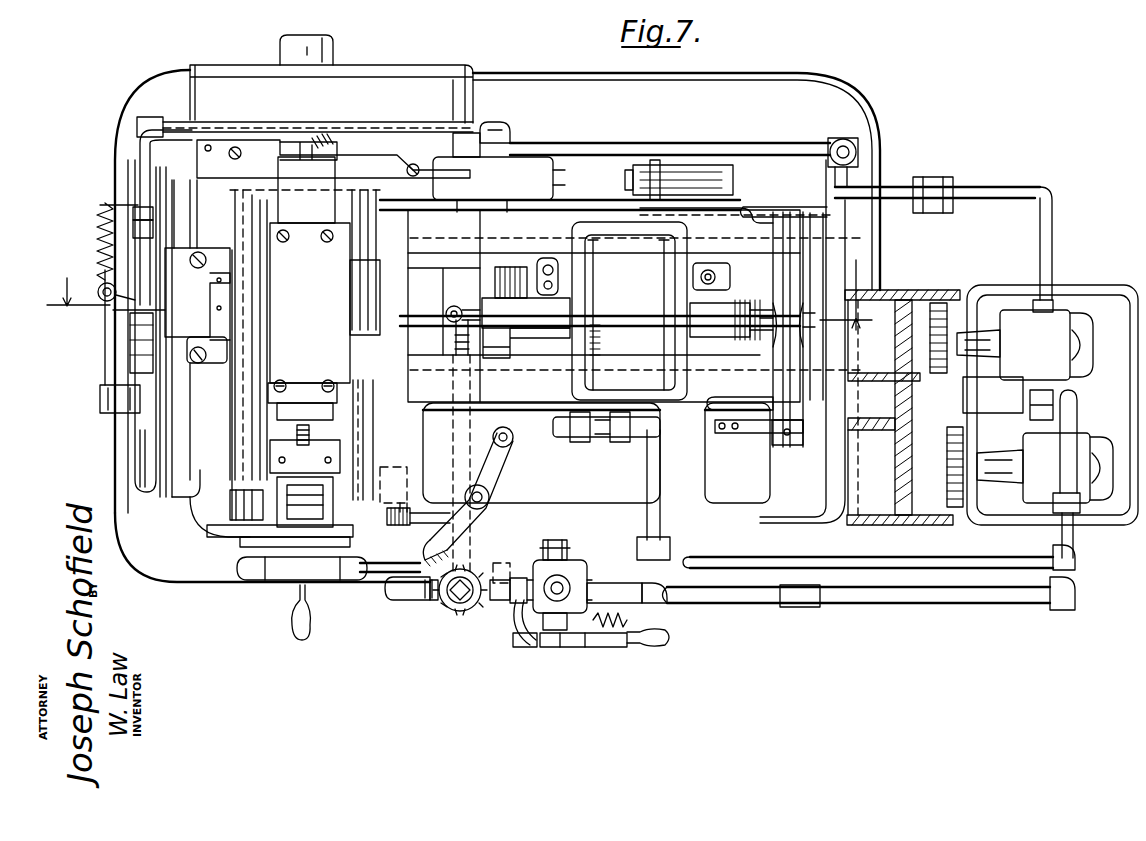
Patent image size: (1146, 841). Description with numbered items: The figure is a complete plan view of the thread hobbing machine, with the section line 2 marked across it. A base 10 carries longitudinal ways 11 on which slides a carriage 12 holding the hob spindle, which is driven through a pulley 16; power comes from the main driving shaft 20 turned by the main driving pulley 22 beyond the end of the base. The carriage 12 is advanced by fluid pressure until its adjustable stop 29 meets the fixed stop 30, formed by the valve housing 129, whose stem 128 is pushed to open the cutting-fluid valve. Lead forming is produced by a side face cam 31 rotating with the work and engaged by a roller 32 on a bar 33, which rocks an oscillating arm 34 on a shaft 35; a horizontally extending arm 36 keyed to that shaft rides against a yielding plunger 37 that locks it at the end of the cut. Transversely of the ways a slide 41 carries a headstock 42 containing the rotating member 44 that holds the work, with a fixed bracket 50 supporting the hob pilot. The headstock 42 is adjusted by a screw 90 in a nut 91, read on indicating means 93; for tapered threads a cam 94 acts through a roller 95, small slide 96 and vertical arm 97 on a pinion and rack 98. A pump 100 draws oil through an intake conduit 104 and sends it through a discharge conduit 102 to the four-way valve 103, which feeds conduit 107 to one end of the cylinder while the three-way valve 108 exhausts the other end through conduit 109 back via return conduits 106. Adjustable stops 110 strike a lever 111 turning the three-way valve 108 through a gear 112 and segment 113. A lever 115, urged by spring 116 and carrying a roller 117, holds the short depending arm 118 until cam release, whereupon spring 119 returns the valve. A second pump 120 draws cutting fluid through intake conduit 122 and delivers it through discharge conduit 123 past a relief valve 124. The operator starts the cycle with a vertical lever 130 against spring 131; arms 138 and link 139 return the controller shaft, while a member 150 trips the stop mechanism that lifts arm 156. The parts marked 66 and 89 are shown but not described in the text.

The section line 2 is at (460, 293).
The base 10 is at (197, 485).
The ways 11 is at (420, 280).
The carriage 12 is at (530, 362).
The pulley 16 is at (617, 250).
The main driving shaft 20 is at (862, 432).
The main driving pulley 22 is at (925, 290).
The adjustable stop 29 is at (648, 165).
The fixed stop 30 is at (553, 170).
The side face cam 31 is at (350, 235).
The roller 32 is at (446, 310).
The bar 33 is at (468, 312).
The oscillating arm 34 is at (820, 332).
The shaft 35 is at (787, 447).
The horizontally extending arm 36 is at (745, 435).
The yielding plunger 37 is at (690, 425).
The slide 41 is at (250, 440).
The headstock 42 is at (372, 382).
The rotating member 44 is at (235, 242).
The fixed bracket 50 is at (177, 364).
The plate 66 is at (335, 152).
The plate with screws 89 is at (302, 397).
The screw 90 is at (297, 432).
The nut 91 is at (305, 477).
The indicating means 93 is at (245, 582).
The cam 94 is at (240, 215).
The roller 95 is at (253, 398).
The small slide 96 is at (255, 463).
The vertical arm 97 is at (230, 508).
The pinion and rack 98 is at (262, 545).
The pump 100 is at (1075, 445).
The discharge conduit 102 is at (865, 598).
The four-way valve 103 is at (560, 560).
The intake conduit 104 is at (768, 553).
The return conduits 106 is at (403, 460).
The conduit 107 is at (647, 470).
The three-way valve 108 is at (470, 612).
The conduit 109 is at (440, 420).
The adjustable stops 110 is at (508, 443).
The lever 111 is at (490, 470).
The gear 112 is at (451, 610).
The segment 113 is at (418, 519).
The lever 115 is at (515, 647).
The spring 116 is at (400, 585).
The roller 117 is at (293, 583).
The short depending arm 118 is at (582, 648).
The spring 119 is at (612, 645).
The second pump 120 is at (1060, 330).
The intake conduit 122 is at (998, 187).
The discharge conduit 123 is at (140, 148).
The relief valve 124 is at (838, 140).
The stem 128 is at (583, 200).
The valve housing 129 is at (510, 150).
The vertical lever 130 is at (100, 300).
The spring 131 is at (96, 246).
The arms 138 is at (112, 414).
The link 139 is at (105, 366).
The member 150 is at (242, 236).
The arm 156 is at (130, 340).